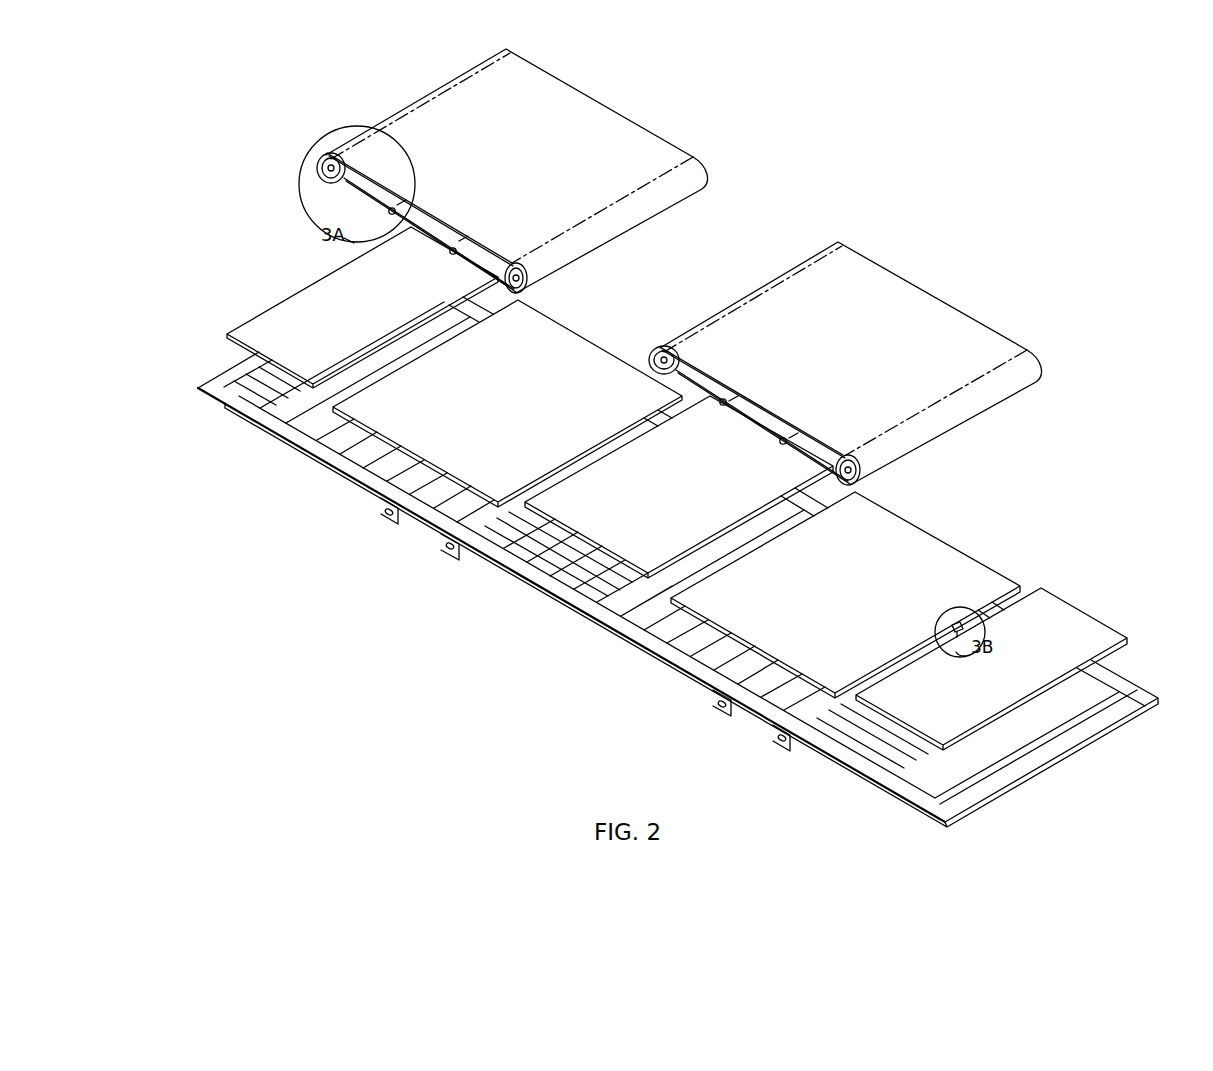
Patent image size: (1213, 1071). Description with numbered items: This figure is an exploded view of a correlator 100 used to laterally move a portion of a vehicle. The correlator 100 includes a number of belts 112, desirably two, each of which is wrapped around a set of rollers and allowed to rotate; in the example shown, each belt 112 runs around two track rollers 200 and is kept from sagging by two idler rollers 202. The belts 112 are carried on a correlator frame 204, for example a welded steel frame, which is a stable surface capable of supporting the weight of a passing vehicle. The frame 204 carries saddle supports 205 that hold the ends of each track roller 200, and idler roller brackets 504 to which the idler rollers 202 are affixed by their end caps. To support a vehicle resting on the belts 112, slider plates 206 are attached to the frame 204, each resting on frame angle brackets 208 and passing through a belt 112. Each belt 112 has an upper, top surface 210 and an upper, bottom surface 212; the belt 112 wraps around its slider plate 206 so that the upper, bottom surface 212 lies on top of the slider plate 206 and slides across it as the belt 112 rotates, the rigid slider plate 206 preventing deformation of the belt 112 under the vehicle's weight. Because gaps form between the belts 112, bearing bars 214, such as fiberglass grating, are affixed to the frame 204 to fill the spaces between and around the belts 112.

The correlator 100 is at (215, 76).
The belt 112 is at (638, 155).
The track roller 200 is at (334, 178).
The idler roller 202 is at (452, 252).
The correlator frame 204 is at (640, 640).
The saddle support 205 is at (962, 648).
The slider plate 206 is at (563, 360).
The frame angle bracket 208 is at (510, 537).
The upper, top surface 210 is at (462, 223).
The upper, bottom surface 212 is at (480, 258).
The bearing bar 214 is at (262, 321).
The idler roller bracket 504 is at (382, 507).